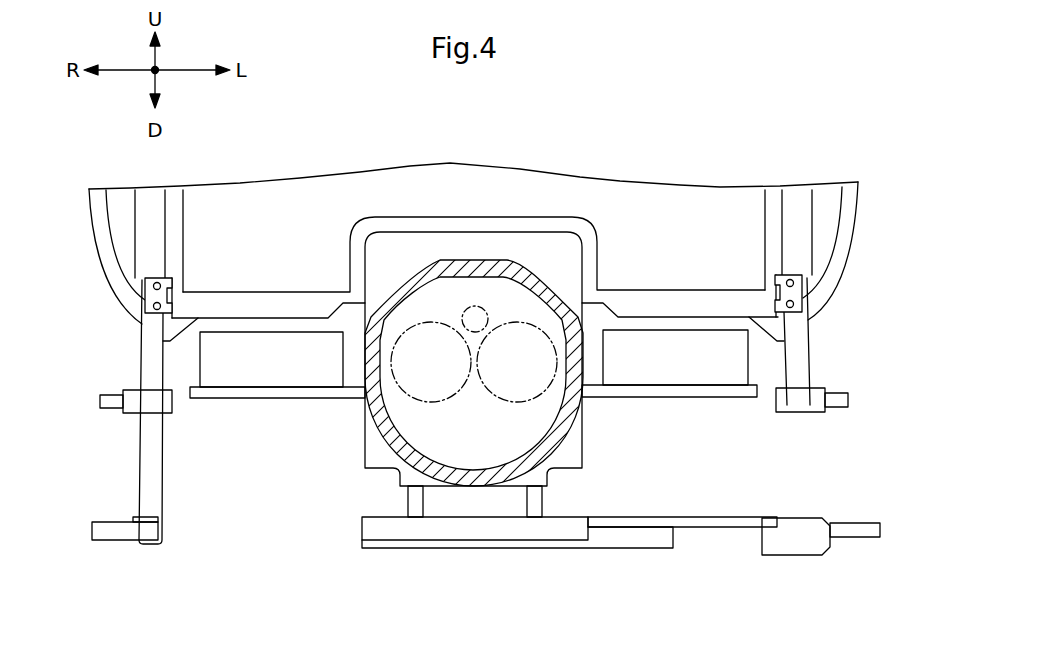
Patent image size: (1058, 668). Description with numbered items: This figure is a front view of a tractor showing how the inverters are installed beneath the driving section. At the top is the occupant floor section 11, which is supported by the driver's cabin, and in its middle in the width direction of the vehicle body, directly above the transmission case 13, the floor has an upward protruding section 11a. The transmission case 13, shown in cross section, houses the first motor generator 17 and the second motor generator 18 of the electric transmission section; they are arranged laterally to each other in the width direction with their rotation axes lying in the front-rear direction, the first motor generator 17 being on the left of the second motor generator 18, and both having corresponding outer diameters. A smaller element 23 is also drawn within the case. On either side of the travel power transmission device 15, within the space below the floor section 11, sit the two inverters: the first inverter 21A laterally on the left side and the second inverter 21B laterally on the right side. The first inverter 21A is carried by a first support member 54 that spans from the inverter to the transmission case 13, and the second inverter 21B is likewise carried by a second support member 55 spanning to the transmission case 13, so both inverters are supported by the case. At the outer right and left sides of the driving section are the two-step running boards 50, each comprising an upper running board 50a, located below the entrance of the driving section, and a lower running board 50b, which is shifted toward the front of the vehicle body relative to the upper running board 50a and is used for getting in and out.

The occupant floor section 11 is at (473, 221).
The upward protruding section 11a is at (511, 210).
The transmission case 13 is at (483, 478).
The travel power transmission device 15 is at (470, 434).
The first motor generator 17 is at (562, 385).
The second motor generator 18 is at (386, 386).
The first inverter 21A is at (667, 348).
The second inverter 21B is at (283, 352).
The small pipe 23 is at (462, 254).
The two-step running board 50 is at (471, 415).
The upper running board 50a is at (106, 396).
The lower running board 50b is at (897, 478).
The first support member 54 is at (693, 392).
The second support member 55 is at (253, 393).